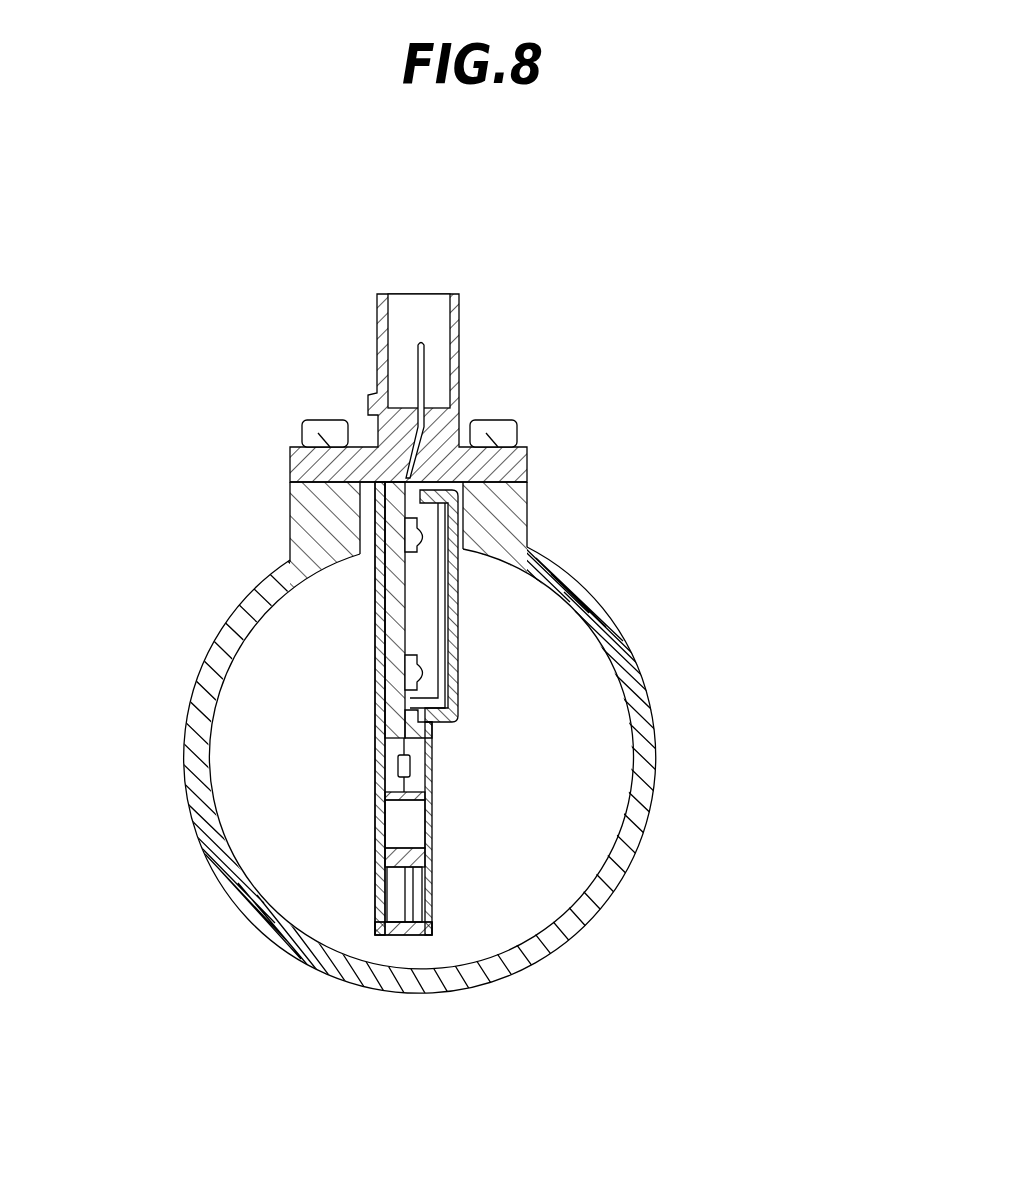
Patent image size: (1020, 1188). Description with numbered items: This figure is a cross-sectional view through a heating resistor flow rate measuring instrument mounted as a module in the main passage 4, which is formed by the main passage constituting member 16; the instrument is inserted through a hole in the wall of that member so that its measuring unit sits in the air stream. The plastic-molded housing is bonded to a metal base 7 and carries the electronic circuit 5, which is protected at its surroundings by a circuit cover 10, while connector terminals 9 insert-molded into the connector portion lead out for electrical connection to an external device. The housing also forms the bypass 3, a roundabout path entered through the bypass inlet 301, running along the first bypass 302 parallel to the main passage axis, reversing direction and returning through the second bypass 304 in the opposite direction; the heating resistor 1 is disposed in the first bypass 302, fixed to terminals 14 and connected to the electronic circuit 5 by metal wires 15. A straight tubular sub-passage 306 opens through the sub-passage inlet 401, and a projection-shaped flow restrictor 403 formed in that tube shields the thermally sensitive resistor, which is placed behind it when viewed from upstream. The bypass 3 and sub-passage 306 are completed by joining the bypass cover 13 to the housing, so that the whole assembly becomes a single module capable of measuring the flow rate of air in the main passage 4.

The heating resistor 1 is at (375, 772).
The bypass 3 is at (621, 839).
The bypass inlet 301 is at (621, 839).
The first bypass 302 is at (417, 782).
The second bypass 304 is at (412, 833).
The sub-passage 306 is at (512, 1011).
The sub-passage inlet 401 is at (418, 912).
The flow restrictor 403 is at (397, 902).
The main passage 4 is at (303, 873).
The electronic circuit 5 is at (438, 604).
The metal base 7 is at (375, 617).
The connector terminals 9 is at (422, 345).
The circuit cover 10 is at (457, 648).
The bypass cover 13 is at (410, 763).
The terminals 14 is at (375, 760).
The metal wires 15 is at (418, 522).
The main passage constituting member 16 is at (562, 572).